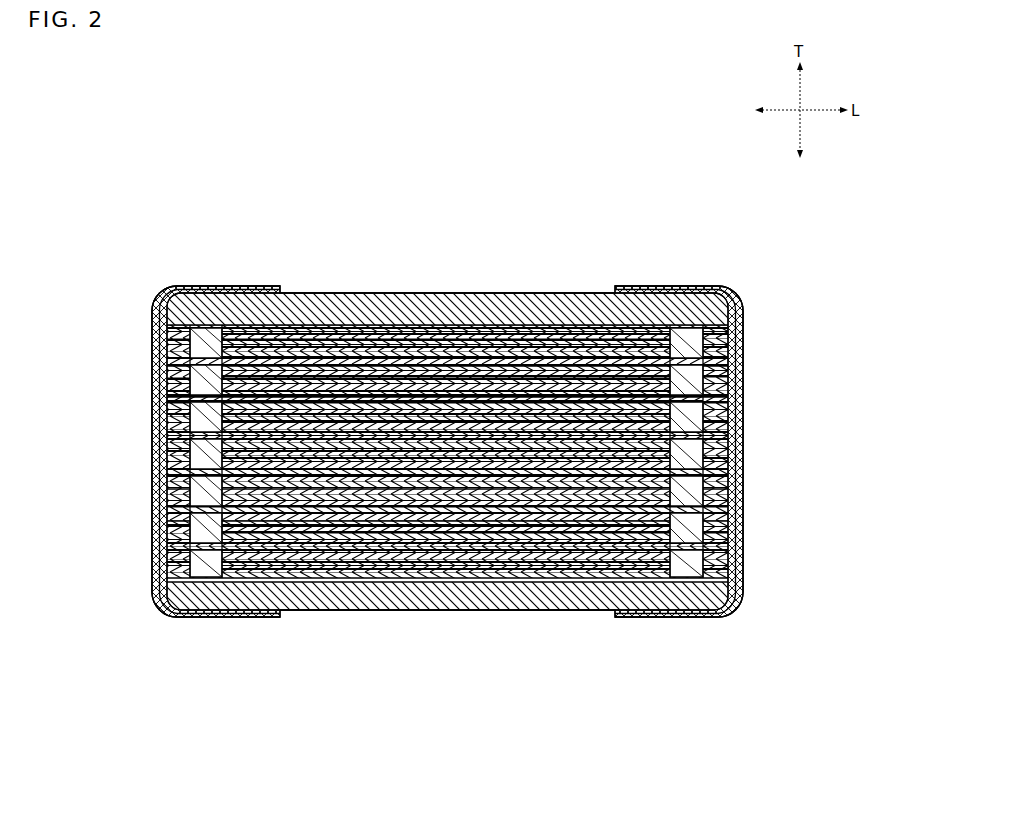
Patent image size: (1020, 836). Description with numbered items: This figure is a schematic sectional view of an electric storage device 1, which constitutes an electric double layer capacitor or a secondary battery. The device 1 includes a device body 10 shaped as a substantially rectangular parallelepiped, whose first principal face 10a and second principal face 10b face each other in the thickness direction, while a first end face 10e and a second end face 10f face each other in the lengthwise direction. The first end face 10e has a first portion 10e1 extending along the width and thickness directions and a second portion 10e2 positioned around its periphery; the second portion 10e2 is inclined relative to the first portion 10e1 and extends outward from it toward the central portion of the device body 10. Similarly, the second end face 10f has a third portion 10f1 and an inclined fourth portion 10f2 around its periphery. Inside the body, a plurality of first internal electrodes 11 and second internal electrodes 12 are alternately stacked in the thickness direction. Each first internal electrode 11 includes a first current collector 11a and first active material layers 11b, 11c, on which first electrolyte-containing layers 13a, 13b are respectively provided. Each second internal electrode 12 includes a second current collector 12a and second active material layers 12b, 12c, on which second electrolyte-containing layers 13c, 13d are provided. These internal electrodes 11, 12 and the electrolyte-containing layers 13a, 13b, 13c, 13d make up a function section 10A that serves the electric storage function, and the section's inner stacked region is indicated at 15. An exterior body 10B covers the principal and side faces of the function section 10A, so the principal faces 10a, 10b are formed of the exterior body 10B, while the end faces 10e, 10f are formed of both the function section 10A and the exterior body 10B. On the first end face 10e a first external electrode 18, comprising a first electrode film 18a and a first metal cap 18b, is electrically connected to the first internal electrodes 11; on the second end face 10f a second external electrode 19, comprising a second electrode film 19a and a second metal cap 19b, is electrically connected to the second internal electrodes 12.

The electric storage device 1 is at (691, 244).
The device body 10 is at (630, 293).
The first principal face 10a is at (428, 287).
The second principal face 10b is at (565, 610).
The function section 10A is at (325, 587).
The exterior body 10B is at (431, 616).
The first end face 10e is at (165, 456).
The first portion 10e1 is at (164, 504).
The second portion 10e2 is at (160, 600).
The second end face 10f is at (740, 440).
The third portion 10f1 is at (740, 550).
The fourth portion 10f2 is at (733, 600).
The first internal electrode 11 is at (403, 229).
The first current collector 11a is at (352, 378).
The first active material layer 11b is at (315, 390).
The first active material layer 11c is at (387, 400).
The second internal electrode 12 is at (603, 229).
The second current collector 12a is at (555, 376).
The second active material layer 12b is at (520, 357).
The second active material layer 12c is at (590, 333).
The first electrolyte-containing layer 13a is at (740, 366).
The first electrolyte-containing layer 13b is at (740, 397).
The second electrolyte-containing layer 13c is at (740, 489).
The second electrolyte-containing layer 13d is at (740, 521).
The inner layer portion 15 is at (445, 322).
The first external electrode 18 is at (148, 376).
The first electrode film 18a is at (152, 345).
The first metal cap 18b is at (157, 297).
The second external electrode 19 is at (746, 585).
The second electrode film 19a is at (740, 456).
The second metal cap 19b is at (743, 326).